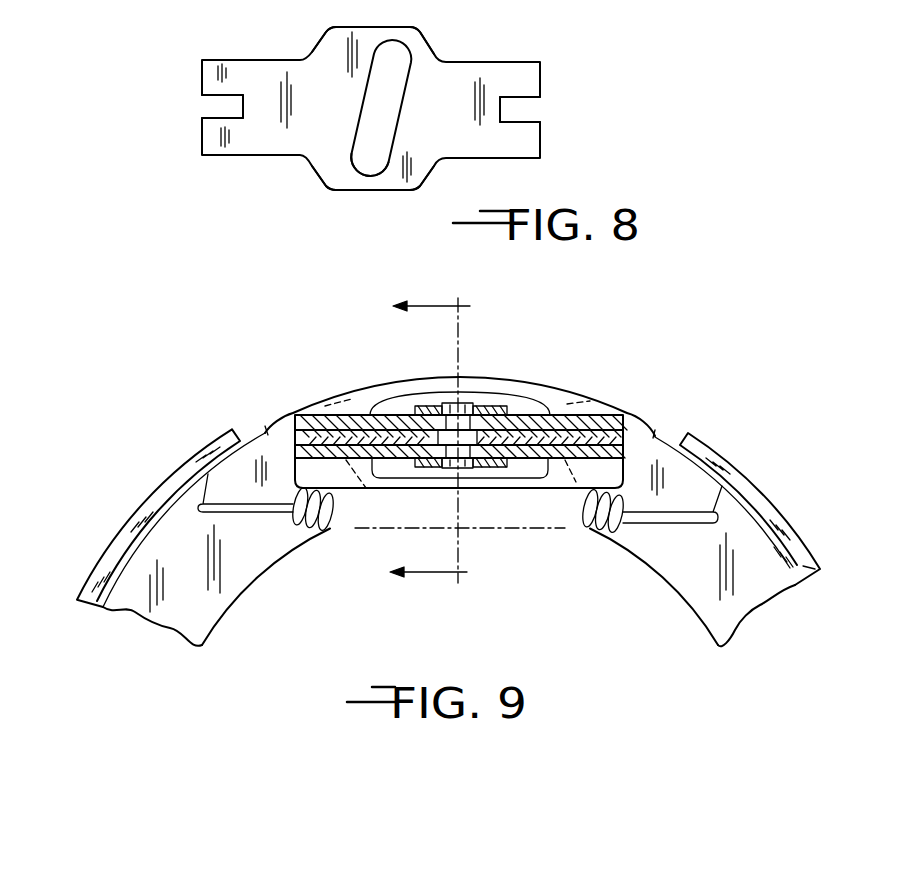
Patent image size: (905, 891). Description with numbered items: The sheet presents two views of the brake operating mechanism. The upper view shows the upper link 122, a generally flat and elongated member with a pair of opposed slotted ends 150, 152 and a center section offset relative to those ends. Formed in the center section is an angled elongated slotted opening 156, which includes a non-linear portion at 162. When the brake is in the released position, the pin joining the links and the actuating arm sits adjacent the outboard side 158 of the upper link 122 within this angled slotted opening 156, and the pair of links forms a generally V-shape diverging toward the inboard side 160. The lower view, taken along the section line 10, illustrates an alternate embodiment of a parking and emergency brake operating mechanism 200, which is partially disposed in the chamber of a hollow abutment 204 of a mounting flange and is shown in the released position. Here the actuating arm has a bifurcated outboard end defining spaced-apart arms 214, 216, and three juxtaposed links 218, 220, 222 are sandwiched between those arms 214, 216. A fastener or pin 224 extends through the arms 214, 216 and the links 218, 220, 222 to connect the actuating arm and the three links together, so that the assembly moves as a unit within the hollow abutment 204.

In FIG. 9, the section line 10- 10 is at (424, 442).
In FIG. 8, the upper link 122 is at (275, 60).
In FIG. 8, the slotted end 150 is at (208, 103).
In FIG. 8, the slotted end 152 is at (525, 108).
In FIG. 8, the angled elongated slotted opening 156 is at (392, 130).
In FIG. 8, the outboard side 158 is at (357, 190).
In FIG. 8, the inboard side 160 is at (392, 27).
In FIG. 8, the non-linear portion 162 is at (354, 157).
In FIG. 9, the parking and emergency brake operating mechanism 200 is at (516, 409).
In FIG. 9, the hollow abutment 204 is at (373, 394).
In FIG. 9, the arm 214 is at (480, 403).
In FIG. 9, the arm 216 is at (490, 479).
In FIG. 9, the link 218 is at (608, 412).
In FIG. 9, the link 220 is at (625, 430).
In FIG. 9, the link 222 is at (690, 452).
In FIG. 9, the fastener or pin 224 is at (438, 398).